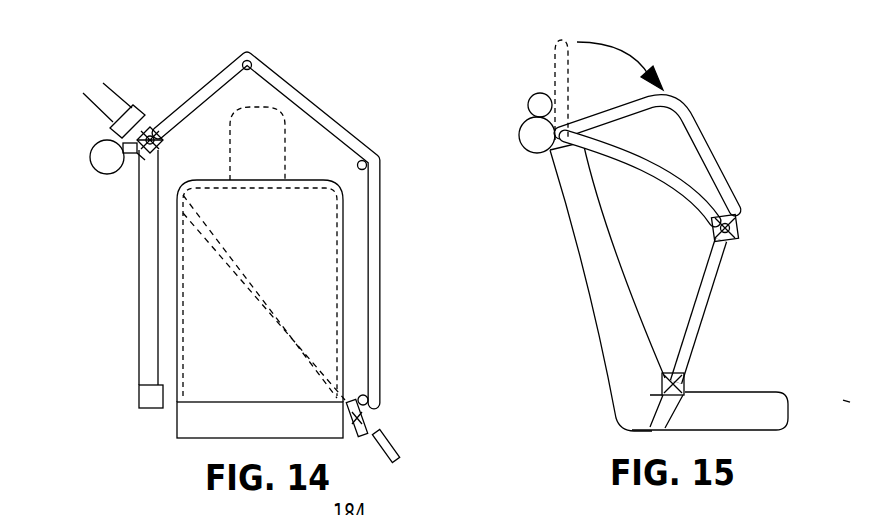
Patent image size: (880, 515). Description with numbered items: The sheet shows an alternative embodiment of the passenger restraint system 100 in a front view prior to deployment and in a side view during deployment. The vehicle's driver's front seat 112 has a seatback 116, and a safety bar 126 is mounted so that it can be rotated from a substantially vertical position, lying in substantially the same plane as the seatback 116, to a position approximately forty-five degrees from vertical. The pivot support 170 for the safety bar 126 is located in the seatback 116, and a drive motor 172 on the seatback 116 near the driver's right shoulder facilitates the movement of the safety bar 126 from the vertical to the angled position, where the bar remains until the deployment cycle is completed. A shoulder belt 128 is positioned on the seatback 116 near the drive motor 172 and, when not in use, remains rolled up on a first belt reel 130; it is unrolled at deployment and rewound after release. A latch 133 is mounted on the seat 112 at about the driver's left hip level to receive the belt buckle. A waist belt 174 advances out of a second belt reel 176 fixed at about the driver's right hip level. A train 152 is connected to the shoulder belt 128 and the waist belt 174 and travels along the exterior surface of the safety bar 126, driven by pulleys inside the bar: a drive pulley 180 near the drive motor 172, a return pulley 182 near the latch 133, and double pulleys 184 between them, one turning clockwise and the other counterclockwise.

In FIG. 14, the passenger restraint system 100 is at (392, 69).
In FIG. 14, the driver's front seat 112 is at (188, 425).
In FIG. 15, the driver's front seat 112 is at (748, 408).
In FIG. 14, the seatback 116 is at (302, 177).
In FIG. 15, the seatback 116 is at (600, 260).
In FIG. 14, the safety bar 126 is at (376, 270).
In FIG. 15, the safety bar 126 is at (682, 103).
In FIG. 15, the shoulder belt 128 is at (668, 172).
In FIG. 14, the first belt reel 130 is at (100, 157).
In FIG. 15, the first belt reel 130 is at (530, 136).
In FIG. 14, the latch 133 is at (397, 452).
In FIG. 14, the train 152 is at (150, 127).
In FIG. 15, the train 152 is at (740, 222).
In FIG. 14, the pivot support 170 is at (252, 285).
In FIG. 14, the drive motor 172 is at (122, 116).
In FIG. 15, the drive motor 172 is at (539, 97).
In FIG. 14, the waist belt 174 is at (147, 277).
In FIG. 15, the waist belt 174 is at (710, 293).
In FIG. 14, the second belt reel 176 is at (152, 400).
In FIG. 15, the second belt reel 176 is at (664, 380).
In FIG. 14, the drive pulley 180 is at (137, 160).
In FIG. 14, the return pulley 182 is at (370, 410).
In FIG. 14, the double pulleys 184 is at (253, 68).